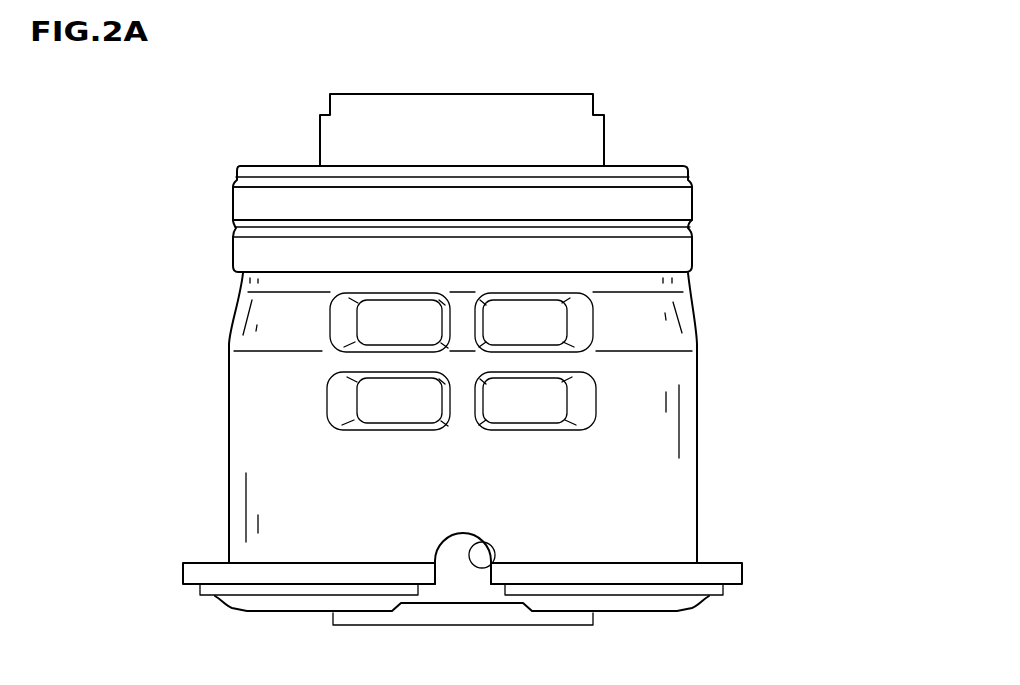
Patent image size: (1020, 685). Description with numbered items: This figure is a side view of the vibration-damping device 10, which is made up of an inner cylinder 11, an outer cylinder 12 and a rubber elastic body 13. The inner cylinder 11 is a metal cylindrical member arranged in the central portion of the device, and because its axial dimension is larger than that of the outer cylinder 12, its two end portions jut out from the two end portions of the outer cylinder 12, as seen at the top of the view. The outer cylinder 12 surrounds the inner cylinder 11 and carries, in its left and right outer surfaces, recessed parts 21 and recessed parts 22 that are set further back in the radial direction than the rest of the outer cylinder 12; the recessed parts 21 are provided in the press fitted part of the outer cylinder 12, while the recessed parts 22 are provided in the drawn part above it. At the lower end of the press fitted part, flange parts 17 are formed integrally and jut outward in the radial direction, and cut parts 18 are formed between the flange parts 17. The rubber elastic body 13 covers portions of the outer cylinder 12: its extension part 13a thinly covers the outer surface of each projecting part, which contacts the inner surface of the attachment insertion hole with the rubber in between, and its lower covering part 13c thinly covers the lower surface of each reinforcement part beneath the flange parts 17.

The vibration-damping device 10 is at (213, 142).
The inner cylinder 11 is at (516, 98).
The outer cylinder 12 is at (463, 418).
The rubber elastic body 13 is at (517, 163).
The extension part 13a is at (686, 198).
The lower covering part 13c is at (255, 611).
The flange parts 17 is at (197, 572).
The cut parts 18 is at (493, 572).
The recessed parts 21 is at (340, 407).
The recessed parts 22 is at (340, 322).